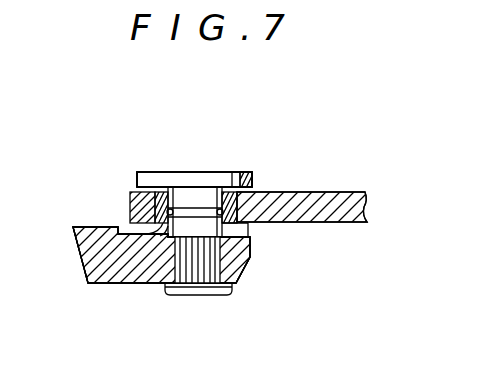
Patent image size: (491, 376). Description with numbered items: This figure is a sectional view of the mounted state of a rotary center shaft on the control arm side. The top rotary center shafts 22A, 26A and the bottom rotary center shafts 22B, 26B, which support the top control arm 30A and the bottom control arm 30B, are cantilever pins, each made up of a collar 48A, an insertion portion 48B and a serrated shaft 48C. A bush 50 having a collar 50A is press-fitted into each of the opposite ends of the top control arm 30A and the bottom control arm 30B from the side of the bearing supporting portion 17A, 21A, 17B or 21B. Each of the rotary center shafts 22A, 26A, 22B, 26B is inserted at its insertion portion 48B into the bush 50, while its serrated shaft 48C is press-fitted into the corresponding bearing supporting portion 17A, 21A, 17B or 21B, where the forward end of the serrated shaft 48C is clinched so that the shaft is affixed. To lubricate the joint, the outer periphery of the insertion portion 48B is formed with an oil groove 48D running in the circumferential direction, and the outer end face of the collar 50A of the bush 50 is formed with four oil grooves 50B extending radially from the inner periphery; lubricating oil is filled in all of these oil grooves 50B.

The bearing supporting portion 17A is at (110, 227).
The bearing supporting portion 17B is at (161, 217).
The bearing supporting portion 21A is at (141, 227).
The bearing supporting portion 21B is at (161, 227).
The top rotary center shaft 22A is at (219, 165).
The bottom rotary center shaft 22B is at (225, 144).
The top rotary center shaft 26A is at (250, 144).
The bottom rotary center shaft 26B is at (273, 144).
The top control arm 30A is at (325, 205).
The bottom control arm 30B is at (322, 187).
The collar 48A is at (246, 182).
The insertion portion 48B is at (220, 258).
The serrated shaft 48C is at (197, 287).
The oil groove 48D is at (185, 212).
The bush 50 is at (250, 205).
The collar 50A is at (249, 228).
The oil groove 50B is at (162, 243).